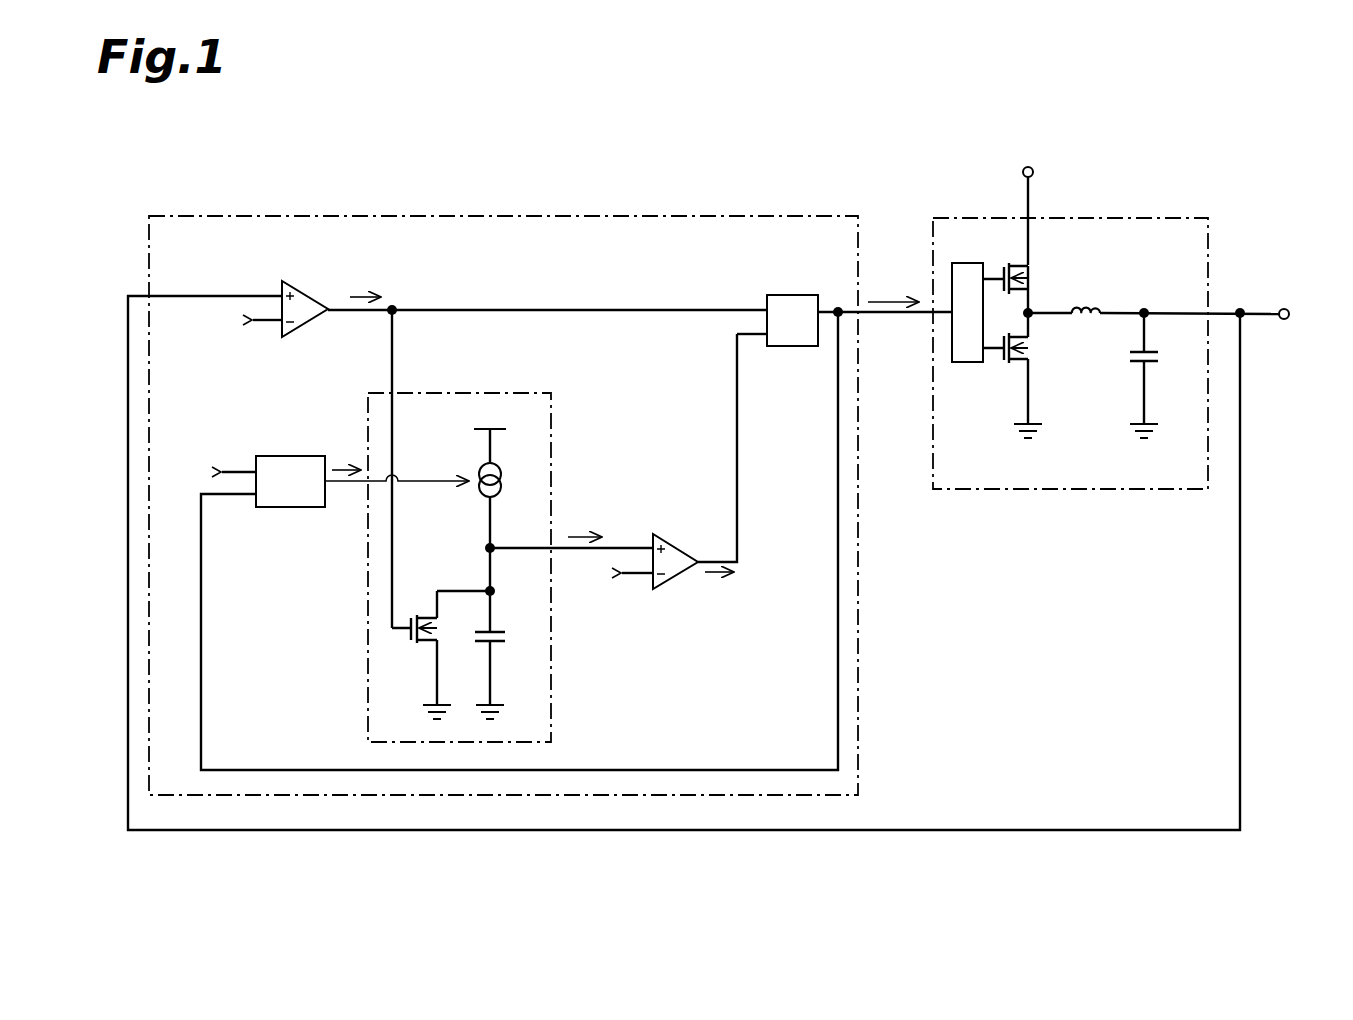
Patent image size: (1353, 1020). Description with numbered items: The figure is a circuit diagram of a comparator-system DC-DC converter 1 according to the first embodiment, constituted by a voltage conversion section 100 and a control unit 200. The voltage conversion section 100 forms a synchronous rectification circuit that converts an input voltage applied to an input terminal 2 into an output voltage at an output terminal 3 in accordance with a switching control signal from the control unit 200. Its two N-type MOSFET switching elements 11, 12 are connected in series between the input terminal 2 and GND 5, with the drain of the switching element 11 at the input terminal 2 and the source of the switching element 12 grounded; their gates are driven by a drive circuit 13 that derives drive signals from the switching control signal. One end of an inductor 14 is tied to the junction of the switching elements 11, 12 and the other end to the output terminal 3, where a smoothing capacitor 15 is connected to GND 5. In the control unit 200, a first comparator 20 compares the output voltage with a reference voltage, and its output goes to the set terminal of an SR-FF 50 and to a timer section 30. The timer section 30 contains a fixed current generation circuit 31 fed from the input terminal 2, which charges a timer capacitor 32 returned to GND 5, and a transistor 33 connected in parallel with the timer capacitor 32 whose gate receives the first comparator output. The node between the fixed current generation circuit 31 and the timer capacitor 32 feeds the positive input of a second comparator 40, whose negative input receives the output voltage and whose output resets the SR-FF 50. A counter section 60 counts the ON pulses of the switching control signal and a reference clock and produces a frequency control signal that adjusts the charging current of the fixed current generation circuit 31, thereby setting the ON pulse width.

The comparator-system DC-DC converter 1 is at (1220, 124).
The input terminal 2 is at (1033, 176).
The output terminal 3 is at (1281, 320).
The GND 5 is at (451, 705).
The switching element 11 is at (1002, 265).
The switching element 12 is at (1001, 362).
The drive circuit 13 is at (965, 362).
The inductor 14 is at (1087, 308).
The capacitor 15 is at (1158, 352).
The first comparator 20 is at (318, 288).
The timer section 30 is at (525, 393).
The fixed current generation circuit 31 is at (501, 489).
The timer capacitor 32 is at (505, 636).
The transistor 33 is at (406, 620).
The second comparator 40 is at (689, 551).
The SR-FF 50 is at (790, 295).
The counter section 60 is at (290, 456).
The voltage conversion section 100 is at (960, 218).
The control unit 200 is at (795, 216).